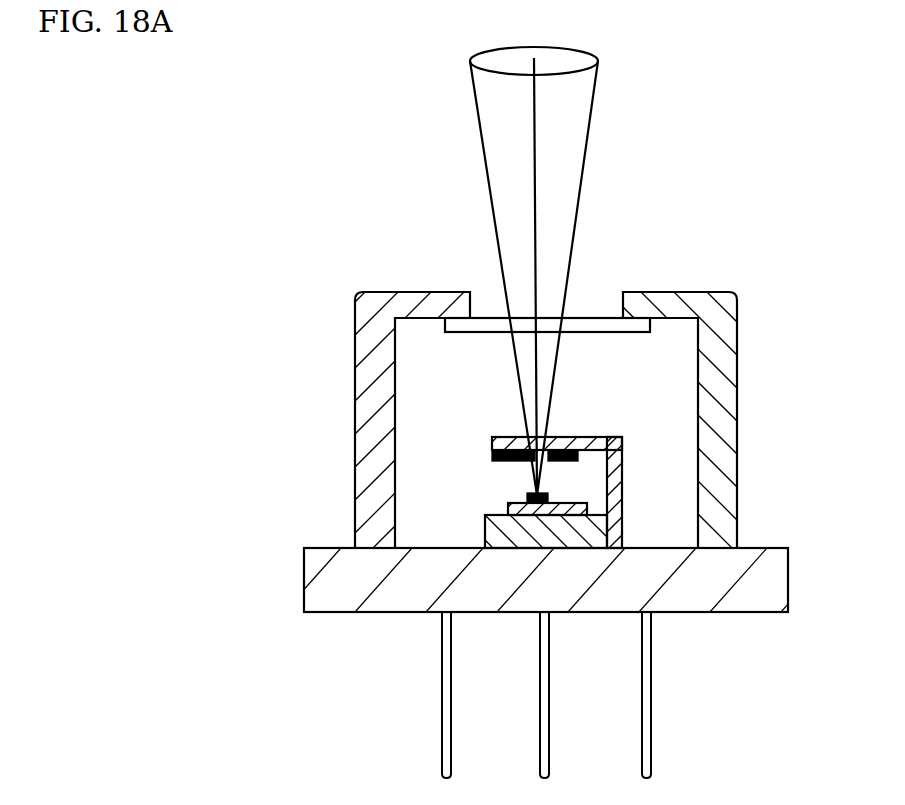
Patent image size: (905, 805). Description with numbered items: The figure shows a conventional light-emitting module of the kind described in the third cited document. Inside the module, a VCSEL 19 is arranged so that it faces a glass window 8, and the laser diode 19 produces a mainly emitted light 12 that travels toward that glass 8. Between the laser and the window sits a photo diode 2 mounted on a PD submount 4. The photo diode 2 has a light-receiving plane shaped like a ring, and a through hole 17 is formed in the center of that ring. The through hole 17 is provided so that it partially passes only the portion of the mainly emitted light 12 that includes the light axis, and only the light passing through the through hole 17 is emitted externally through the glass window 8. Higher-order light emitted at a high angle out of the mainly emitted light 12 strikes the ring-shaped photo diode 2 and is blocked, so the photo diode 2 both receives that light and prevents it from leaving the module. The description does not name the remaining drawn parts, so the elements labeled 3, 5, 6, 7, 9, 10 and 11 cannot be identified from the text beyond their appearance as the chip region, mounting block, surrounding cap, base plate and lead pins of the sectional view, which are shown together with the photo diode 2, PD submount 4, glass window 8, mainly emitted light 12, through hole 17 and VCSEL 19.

The photo diode 2 is at (494, 437).
The semiconductor laser chip 3 is at (520, 505).
The PD submount 4 is at (622, 485).
The heat sink block 5 is at (610, 528).
The cap 6 is at (722, 342).
The stem 7 is at (342, 563).
The glass window 8 is at (588, 318).
The lead pin 9 is at (442, 700).
The lead pin 10 is at (549, 708).
The lead pin 11 is at (651, 700).
The mainly emitted light 12 is at (488, 192).
The through hole 17 is at (550, 437).
The VCSEL 19 is at (526, 500).